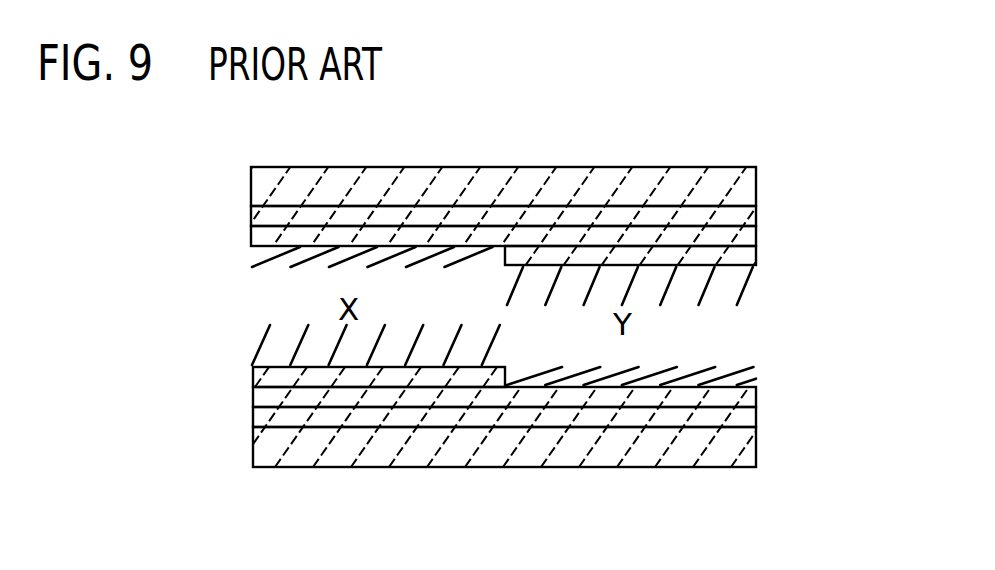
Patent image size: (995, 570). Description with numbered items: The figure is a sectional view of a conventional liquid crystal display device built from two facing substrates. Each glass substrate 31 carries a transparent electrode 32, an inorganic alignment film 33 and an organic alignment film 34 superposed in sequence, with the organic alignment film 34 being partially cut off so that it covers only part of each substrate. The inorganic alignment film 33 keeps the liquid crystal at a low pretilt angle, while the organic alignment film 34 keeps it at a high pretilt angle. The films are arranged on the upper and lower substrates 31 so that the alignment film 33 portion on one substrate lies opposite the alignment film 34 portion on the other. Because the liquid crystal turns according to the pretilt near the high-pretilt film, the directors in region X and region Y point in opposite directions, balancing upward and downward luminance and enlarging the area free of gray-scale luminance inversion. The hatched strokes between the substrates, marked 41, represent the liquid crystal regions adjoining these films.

The glass substrate 31 is at (665, 181).
The transparent electrode 32 is at (307, 213).
The inorganic alignment film 33 is at (450, 237).
The organic alignment film 34 is at (537, 255).
The electrode patterns 41 is at (738, 303).